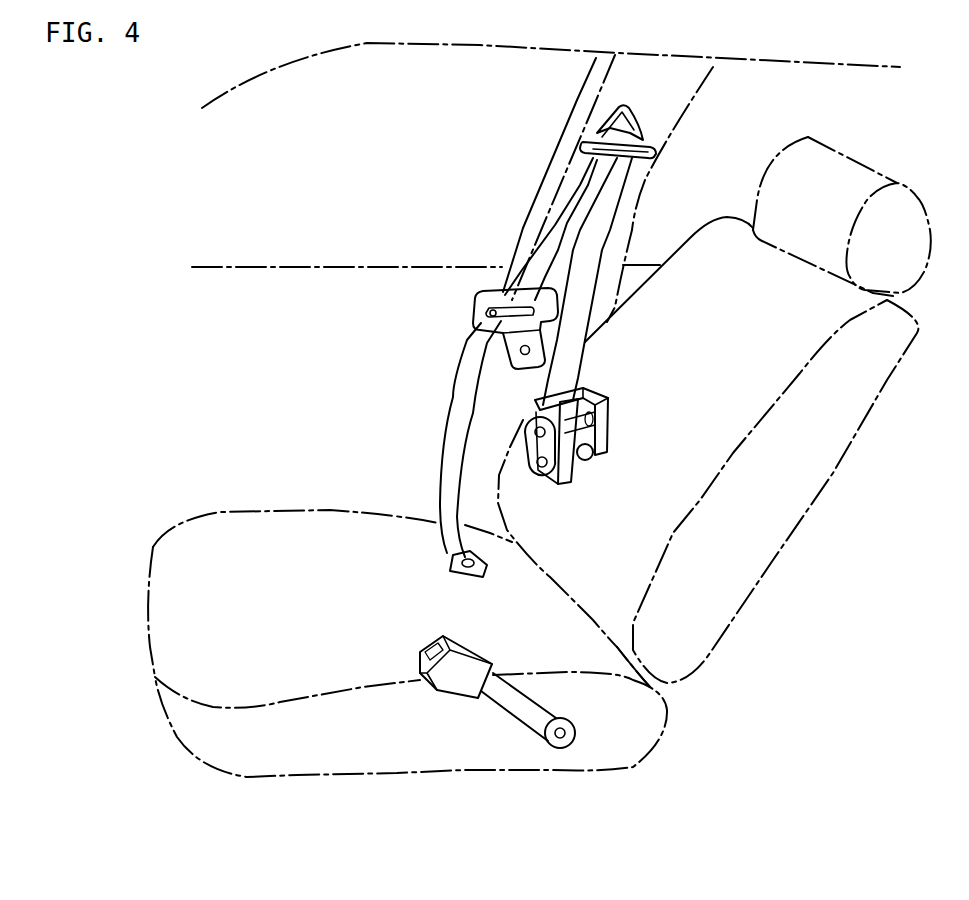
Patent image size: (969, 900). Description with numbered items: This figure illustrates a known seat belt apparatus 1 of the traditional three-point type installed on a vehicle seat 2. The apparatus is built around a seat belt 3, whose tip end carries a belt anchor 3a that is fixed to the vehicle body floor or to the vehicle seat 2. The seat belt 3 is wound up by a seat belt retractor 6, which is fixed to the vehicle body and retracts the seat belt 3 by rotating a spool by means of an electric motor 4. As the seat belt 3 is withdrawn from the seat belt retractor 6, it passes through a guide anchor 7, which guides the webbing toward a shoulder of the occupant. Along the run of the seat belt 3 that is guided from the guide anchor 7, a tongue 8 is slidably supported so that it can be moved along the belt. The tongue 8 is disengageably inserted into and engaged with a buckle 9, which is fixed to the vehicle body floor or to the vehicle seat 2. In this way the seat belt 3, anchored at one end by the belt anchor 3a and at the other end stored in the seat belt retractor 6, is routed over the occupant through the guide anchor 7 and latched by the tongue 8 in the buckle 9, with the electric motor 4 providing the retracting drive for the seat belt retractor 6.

The seat belt apparatus 1 is at (637, 528).
The vehicle seat 2 is at (293, 762).
The seat belt 3 is at (567, 222).
The belt anchor 3a is at (473, 578).
The electric motor 4 is at (587, 458).
The seat belt retractor 6 is at (610, 432).
The guide anchor 7 is at (630, 130).
The tongue 8 is at (467, 358).
The buckle 9 is at (435, 674).